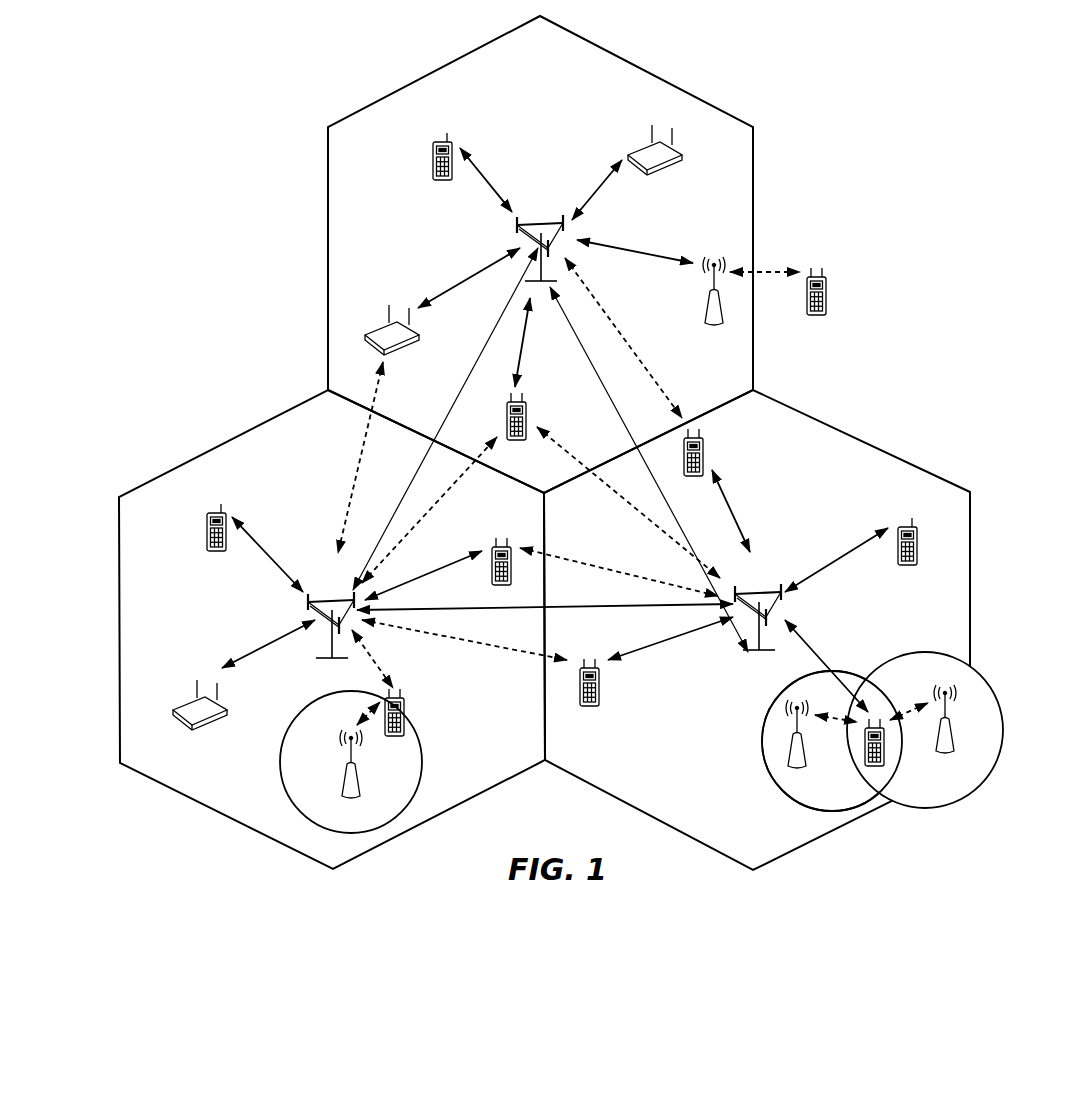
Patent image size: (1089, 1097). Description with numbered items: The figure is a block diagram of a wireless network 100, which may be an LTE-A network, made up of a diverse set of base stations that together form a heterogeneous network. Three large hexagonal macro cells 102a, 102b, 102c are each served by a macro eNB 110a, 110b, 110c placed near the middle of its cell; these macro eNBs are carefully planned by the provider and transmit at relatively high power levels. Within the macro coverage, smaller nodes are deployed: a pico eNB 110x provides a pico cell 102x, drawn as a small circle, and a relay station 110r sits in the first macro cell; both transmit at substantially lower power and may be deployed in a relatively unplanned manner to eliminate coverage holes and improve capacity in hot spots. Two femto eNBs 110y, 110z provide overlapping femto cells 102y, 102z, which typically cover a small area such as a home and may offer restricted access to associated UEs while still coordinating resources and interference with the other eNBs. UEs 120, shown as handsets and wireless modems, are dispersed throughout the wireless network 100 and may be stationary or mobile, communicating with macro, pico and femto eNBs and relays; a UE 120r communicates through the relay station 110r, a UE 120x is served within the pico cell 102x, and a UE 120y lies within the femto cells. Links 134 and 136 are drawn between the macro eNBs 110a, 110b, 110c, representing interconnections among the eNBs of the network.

The wireless network 100 is at (897, 82).
The macro cell 102a is at (648, 71).
The macro cell 102b is at (222, 444).
The macro cell 102c is at (866, 443).
The pico cell 102x is at (300, 711).
The femto cell 102y is at (770, 706).
The femto cell 102z is at (932, 640).
The macro eNB 110a is at (532, 222).
The macro eNB 110b is at (335, 579).
The macro eNB 110c is at (753, 592).
The relay station 110r is at (705, 307).
The pico eNB 110x is at (360, 790).
The femto eNB 110y is at (808, 758).
The femto eNB 110z is at (955, 742).
The UE 120 is at (432, 146).
The user equipment served by relay 120r is at (826, 305).
The user equipment in pico cell 120x is at (407, 710).
The user equipment in femto cell 120y is at (865, 762).
The backhaul link 134 is at (443, 420).
The backhaul link 136 is at (612, 418).